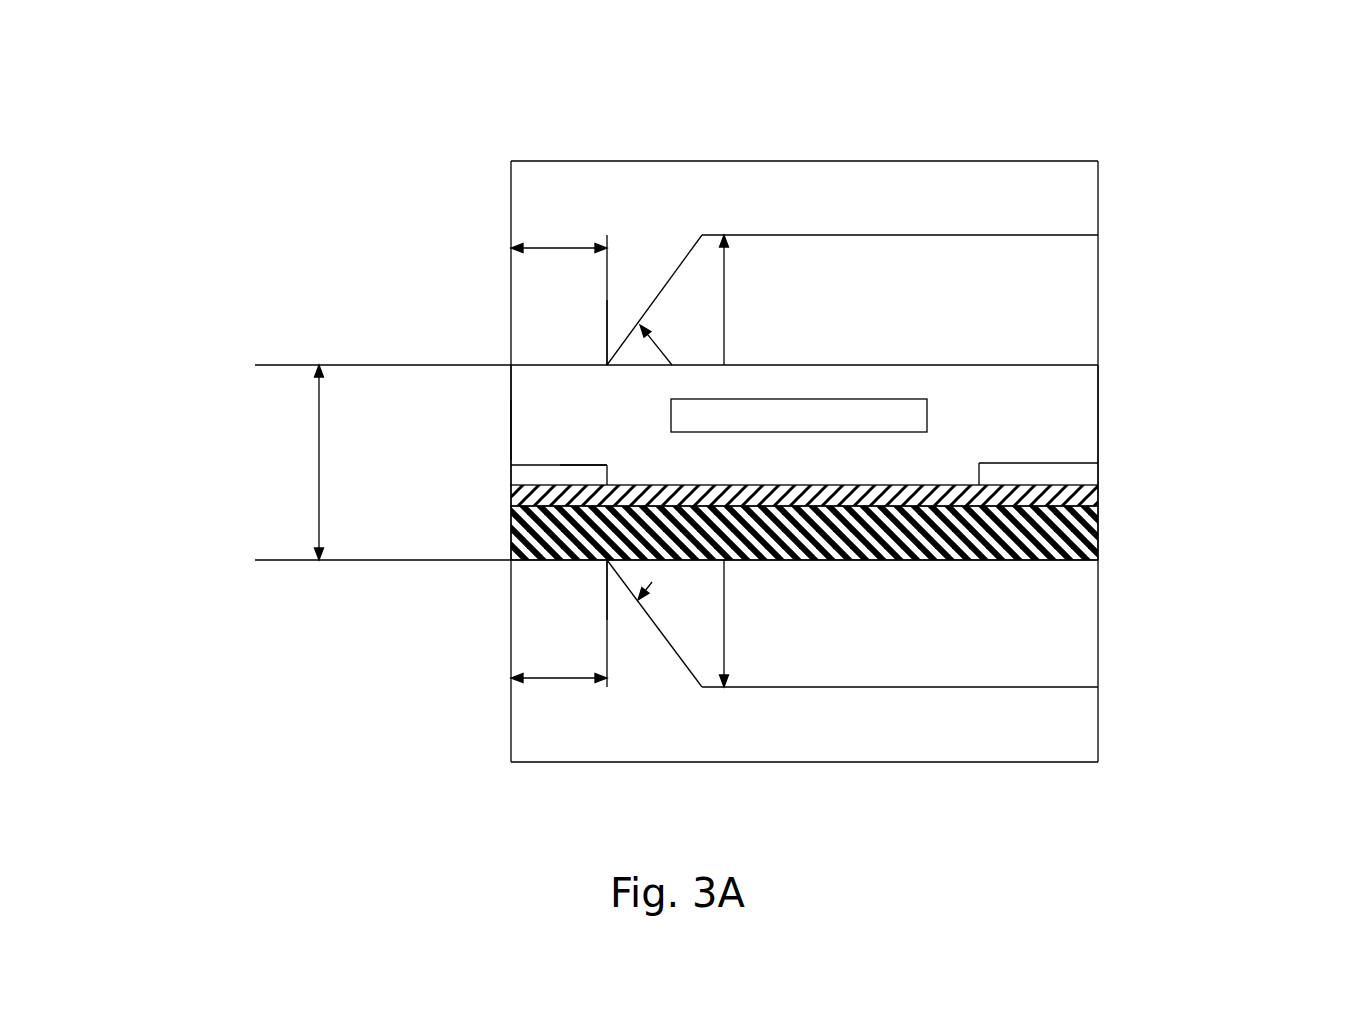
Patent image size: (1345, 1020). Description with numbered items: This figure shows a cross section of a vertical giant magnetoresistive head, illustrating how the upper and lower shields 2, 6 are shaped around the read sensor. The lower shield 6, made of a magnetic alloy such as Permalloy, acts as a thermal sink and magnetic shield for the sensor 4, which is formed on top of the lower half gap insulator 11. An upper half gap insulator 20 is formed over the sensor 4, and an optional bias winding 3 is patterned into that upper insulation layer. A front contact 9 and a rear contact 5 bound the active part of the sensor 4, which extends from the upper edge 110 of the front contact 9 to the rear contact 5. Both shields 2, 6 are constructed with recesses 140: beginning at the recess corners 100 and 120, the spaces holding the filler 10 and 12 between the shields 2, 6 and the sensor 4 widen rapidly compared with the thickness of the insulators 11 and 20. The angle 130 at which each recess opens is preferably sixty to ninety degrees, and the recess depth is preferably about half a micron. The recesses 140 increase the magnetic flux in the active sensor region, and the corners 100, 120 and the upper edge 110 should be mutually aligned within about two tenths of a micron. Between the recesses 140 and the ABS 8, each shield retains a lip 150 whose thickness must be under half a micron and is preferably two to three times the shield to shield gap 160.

The upper shield 2 is at (1075, 202).
The filler 10 is at (1045, 322).
The bias winding 3 is at (927, 419).
The upper half gap insulator 20 is at (1067, 429).
The rear contact 5 is at (1098, 472).
The front contact 9 is at (510, 477).
The sensor 4 is at (1098, 493).
The lower half gap insulator 11 is at (1098, 535).
The filler 12 is at (1057, 622).
The lower shield 6 is at (1077, 717).
The ABS 8 is at (490, 431).
The recess corner 100 is at (607, 560).
The upper edge of the front contact 110 is at (607, 465).
The recess corner 120 is at (607, 365).
The angle 130 is at (660, 342).
The recess 140 is at (724, 298).
The lip 150 is at (552, 248).
The shield to shield gap 160 is at (318, 465).